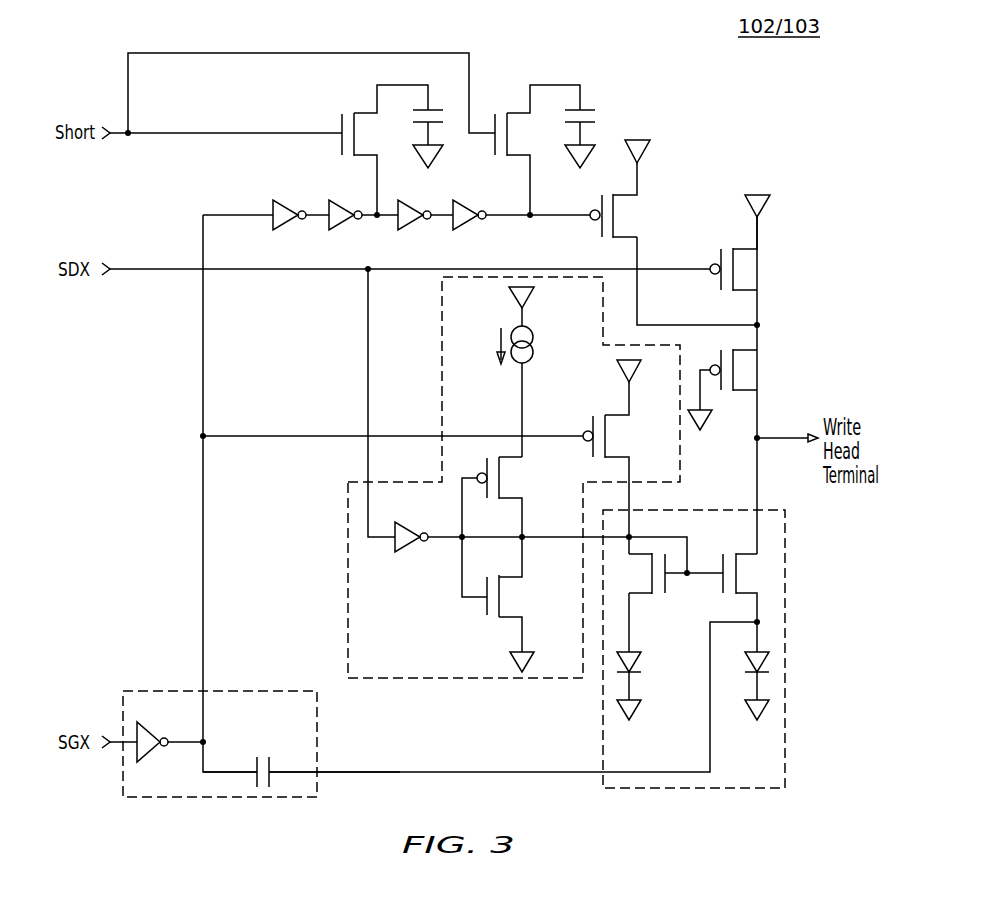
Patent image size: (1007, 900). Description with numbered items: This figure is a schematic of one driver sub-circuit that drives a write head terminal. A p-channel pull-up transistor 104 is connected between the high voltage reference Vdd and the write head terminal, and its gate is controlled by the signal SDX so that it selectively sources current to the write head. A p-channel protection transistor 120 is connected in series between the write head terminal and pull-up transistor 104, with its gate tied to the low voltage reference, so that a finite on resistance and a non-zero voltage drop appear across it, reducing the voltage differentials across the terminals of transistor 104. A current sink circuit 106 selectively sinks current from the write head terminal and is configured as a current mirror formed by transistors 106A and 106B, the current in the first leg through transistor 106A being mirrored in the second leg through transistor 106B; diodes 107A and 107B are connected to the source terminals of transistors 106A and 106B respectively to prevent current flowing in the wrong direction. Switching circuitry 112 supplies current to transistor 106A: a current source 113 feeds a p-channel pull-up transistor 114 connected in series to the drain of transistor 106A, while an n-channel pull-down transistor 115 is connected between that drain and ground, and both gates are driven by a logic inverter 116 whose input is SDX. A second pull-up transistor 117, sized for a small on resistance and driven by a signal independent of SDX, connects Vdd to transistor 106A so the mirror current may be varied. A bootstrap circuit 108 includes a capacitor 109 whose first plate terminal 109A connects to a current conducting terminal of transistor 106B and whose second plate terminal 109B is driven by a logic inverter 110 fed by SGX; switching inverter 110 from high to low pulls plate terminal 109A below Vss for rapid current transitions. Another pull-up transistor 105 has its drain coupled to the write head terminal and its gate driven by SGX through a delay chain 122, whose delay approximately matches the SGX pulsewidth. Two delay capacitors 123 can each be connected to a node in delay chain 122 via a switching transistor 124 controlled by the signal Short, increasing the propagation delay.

The p-channel transistor 104 is at (755, 267).
The second pull-up transistor 105 is at (634, 211).
The current sink circuit 106 is at (785, 738).
The transistor 106A is at (640, 596).
The transistor 106B is at (744, 553).
The diode 107A is at (638, 662).
The diode 107B is at (749, 660).
The bootstrap circuit 108 is at (197, 800).
The capacitor 109 is at (268, 762).
The first plate terminal 109A is at (322, 770).
The second plate terminal 109B is at (238, 770).
The logic inverter 110 is at (148, 722).
The switching circuitry 112 is at (347, 603).
The current source 113 is at (535, 340).
The pull-up transistor 114 is at (520, 473).
The pull-down transistor 115 is at (520, 593).
The logic inverter 116 is at (405, 552).
The second pull-up transistor 117 is at (620, 434).
The protection transistor 120 is at (755, 368).
The delay chain 122 is at (305, 243).
The delay capacitor 123 is at (437, 124).
The switching transistor 124 is at (355, 112).